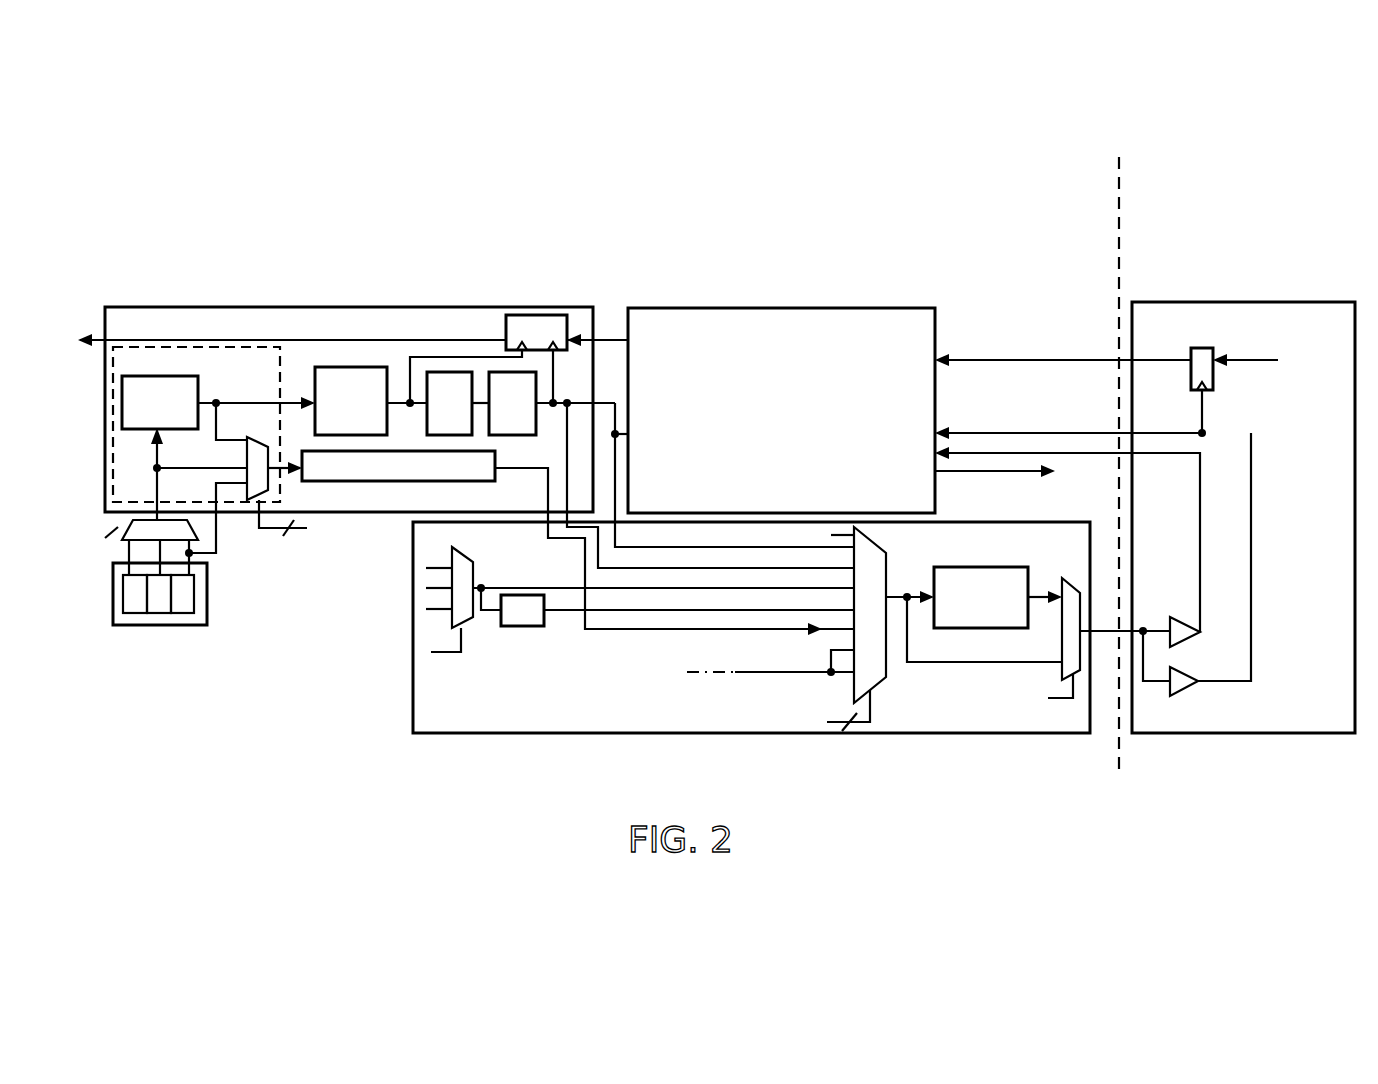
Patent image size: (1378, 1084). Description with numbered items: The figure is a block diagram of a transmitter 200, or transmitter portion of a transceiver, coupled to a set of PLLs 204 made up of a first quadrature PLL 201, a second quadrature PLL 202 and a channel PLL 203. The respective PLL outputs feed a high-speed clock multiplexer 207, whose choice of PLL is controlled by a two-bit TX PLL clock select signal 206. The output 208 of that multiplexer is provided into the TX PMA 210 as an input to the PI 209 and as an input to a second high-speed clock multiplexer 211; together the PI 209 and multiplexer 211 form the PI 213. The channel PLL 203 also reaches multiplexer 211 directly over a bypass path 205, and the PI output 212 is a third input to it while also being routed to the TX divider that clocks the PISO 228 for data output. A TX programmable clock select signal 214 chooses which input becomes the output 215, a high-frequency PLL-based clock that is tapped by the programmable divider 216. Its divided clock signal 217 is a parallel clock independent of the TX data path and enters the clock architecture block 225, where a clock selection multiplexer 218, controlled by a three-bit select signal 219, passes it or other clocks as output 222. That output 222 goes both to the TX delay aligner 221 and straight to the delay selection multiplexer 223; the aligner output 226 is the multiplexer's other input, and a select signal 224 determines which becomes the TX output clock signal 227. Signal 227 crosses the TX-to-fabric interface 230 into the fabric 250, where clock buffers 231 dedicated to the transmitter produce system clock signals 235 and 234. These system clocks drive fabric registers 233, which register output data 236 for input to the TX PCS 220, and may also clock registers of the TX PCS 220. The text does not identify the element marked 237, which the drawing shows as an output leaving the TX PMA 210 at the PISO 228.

The transmitter 200 is at (990, 203).
The first quadrature PLL 201 is at (134, 615).
The second quadrature PLL 202 is at (160, 615).
The channel PLL 203 is at (183, 615).
The PLLs 204 is at (208, 600).
The bypass path 205 is at (218, 553).
The TX PLL clock select signal 206 is at (118, 527).
The high-speed clock multiplexer 207 is at (110, 535).
The output of high-speed clock multiplexer 208 is at (160, 494).
The PI 209 is at (158, 376).
The TX PMA 210 is at (240, 307).
The high-speed clock multiplexer 211 is at (246, 462).
The output of PI 212 is at (216, 402).
The PI 213 is at (300, 368).
The TX programmable clock select signal 214 is at (292, 532).
The output of high-speed clock multiplexer 215 is at (302, 482).
The programmable divider 216 is at (398, 482).
The divided clock signal 217 is at (540, 478).
The clock selection multiplexer 218 is at (888, 570).
The select signal 219 is at (826, 722).
The TX PCS 220 is at (683, 307).
The TX delay aligner 221 is at (950, 567).
The output of clock selection multiplexer 222 is at (897, 600).
The delay selection multiplexer 223 is at (1062, 660).
The select signal 224 is at (1048, 698).
The clock architecture block 225 is at (898, 734).
The output of TX delay aligner 226 is at (1068, 580).
The TX output clock signal 227 is at (1104, 631).
The PISO 228 is at (506, 326).
The TX-to-fabric interface 230 is at (1122, 752).
The clock buffers 231 is at (1180, 645).
The registers 233 is at (1217, 380).
The output of clock buffer 234 is at (1252, 585).
The output of clock buffer 235 is at (1200, 516).
The output data 236 is at (1252, 358).
The serial data output 237 is at (88, 338).
The fabric 250 is at (1174, 302).